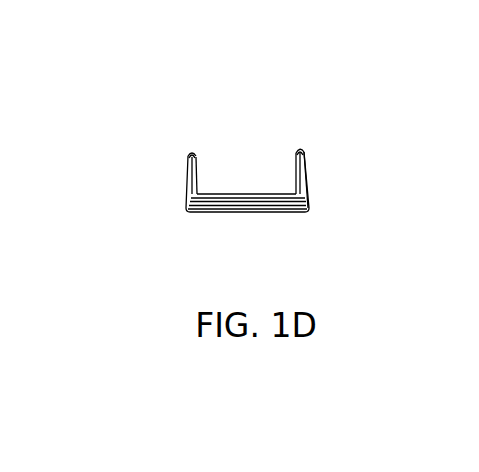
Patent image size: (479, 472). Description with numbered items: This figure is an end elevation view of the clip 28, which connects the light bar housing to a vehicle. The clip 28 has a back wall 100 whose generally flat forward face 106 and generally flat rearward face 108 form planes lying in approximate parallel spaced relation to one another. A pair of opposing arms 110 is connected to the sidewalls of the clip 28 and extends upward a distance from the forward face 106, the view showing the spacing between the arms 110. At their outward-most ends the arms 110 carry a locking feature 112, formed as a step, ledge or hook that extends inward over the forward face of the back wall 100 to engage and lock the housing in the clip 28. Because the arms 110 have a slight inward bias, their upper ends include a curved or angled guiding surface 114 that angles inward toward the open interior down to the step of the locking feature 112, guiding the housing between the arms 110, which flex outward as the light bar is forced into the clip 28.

The clip 28 is at (213, 75).
The back wall 100 is at (290, 213).
The forward face 106 is at (250, 193).
The rearward face 108 is at (254, 213).
The arm 110 is at (305, 189).
The locking feature 112 is at (205, 165).
The guiding surface 114 is at (193, 153).